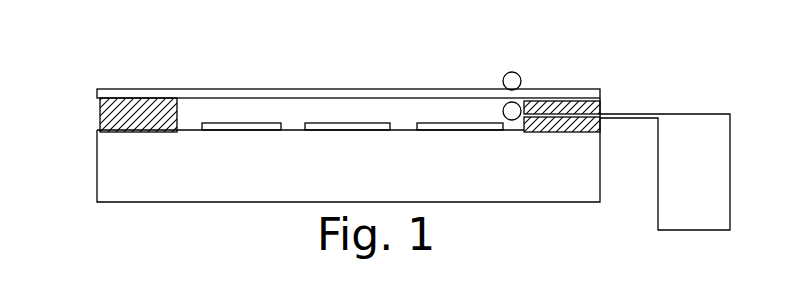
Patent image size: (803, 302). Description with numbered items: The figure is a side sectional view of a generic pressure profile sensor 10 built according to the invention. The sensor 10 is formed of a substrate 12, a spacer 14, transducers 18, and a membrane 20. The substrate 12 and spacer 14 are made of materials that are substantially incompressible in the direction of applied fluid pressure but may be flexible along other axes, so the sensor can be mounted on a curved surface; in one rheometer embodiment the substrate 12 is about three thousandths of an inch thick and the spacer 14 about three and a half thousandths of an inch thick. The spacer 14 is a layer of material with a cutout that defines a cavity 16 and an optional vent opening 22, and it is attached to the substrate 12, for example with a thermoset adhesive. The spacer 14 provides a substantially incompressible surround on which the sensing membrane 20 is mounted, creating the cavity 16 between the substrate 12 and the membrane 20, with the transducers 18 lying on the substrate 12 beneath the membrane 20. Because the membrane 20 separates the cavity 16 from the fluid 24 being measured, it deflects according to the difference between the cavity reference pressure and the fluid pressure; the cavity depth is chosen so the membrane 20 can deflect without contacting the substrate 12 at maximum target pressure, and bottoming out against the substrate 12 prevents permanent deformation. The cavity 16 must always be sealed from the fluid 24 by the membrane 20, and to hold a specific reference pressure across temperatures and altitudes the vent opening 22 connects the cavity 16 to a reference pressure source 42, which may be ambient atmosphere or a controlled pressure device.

The pressure profile sensor 10 is at (103, 29).
The substrate 12 is at (98, 162).
The spacer 14 is at (100, 113).
The cavity 16 is at (515, 126).
The transducers 18 is at (240, 130).
The membrane 20 is at (258, 89).
The vent opening 22 is at (557, 114).
The fluid 24 is at (469, 53).
The reference pressure source 42 is at (688, 224).